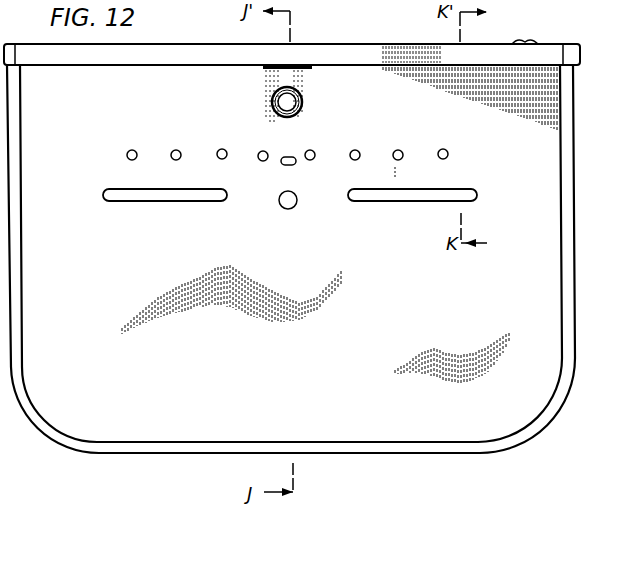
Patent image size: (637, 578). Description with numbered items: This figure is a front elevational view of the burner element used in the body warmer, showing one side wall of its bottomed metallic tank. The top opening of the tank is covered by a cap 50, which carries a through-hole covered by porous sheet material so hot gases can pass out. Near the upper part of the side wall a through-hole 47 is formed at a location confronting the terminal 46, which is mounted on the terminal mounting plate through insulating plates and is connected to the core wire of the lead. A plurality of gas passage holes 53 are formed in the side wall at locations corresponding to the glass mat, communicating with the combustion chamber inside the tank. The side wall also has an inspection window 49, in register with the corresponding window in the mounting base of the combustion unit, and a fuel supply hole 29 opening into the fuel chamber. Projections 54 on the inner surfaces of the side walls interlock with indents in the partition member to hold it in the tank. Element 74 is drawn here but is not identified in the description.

The fuel supply hole 29 is at (294, 208).
The terminal 46 is at (302, 102).
The through-hole 47 is at (273, 105).
The inspection window 49 is at (283, 166).
The cap 50 is at (381, 50).
The gas passage holes 53 is at (172, 151).
The projection 54 is at (163, 196).
The lug 74 is at (534, 42).